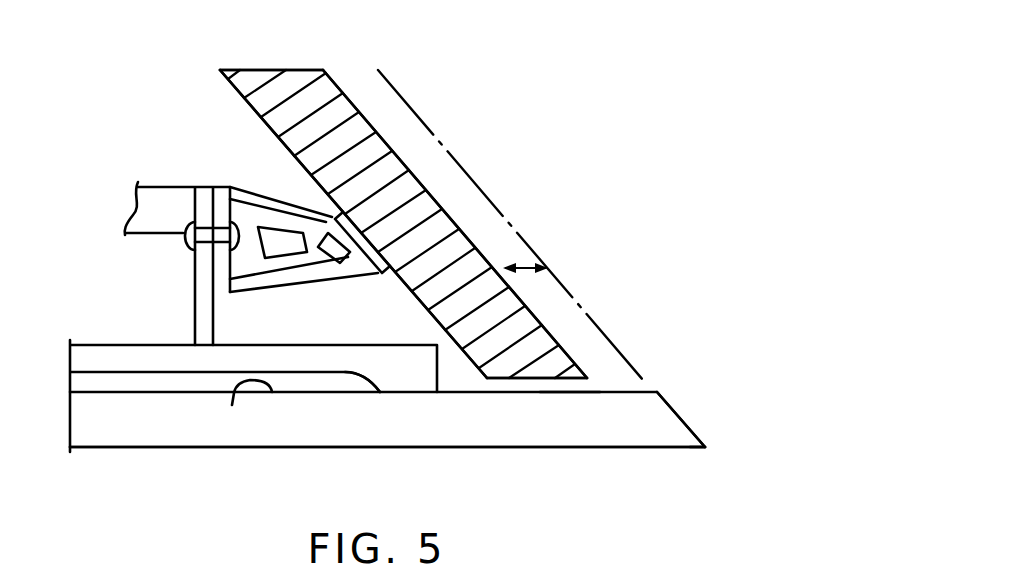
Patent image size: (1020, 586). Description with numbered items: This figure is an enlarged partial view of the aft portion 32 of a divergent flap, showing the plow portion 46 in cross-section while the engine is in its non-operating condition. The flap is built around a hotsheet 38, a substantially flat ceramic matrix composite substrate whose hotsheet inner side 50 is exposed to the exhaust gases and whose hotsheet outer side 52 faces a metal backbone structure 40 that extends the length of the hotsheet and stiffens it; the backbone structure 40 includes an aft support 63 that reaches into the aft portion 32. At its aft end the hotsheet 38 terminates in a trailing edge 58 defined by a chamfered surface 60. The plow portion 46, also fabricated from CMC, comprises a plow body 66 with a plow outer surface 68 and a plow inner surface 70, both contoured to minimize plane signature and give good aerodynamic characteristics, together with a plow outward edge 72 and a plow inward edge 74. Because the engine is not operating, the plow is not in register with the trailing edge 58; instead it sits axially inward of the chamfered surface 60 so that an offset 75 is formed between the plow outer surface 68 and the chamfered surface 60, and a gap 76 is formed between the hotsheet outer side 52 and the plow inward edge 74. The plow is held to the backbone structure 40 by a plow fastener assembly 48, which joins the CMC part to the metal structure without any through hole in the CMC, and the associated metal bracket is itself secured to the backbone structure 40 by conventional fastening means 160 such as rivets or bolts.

The aft portion 32 is at (622, 455).
The hotsheet 38 is at (170, 418).
The backbone structure 40 is at (138, 309).
The plow portion 46 is at (443, 124).
The plow fastener assembly 48 is at (334, 272).
The hotsheet inner side 50 is at (407, 448).
The hotsheet outer side 52 is at (242, 412).
The trailing edge 58 is at (705, 450).
The chamfered surface 60 is at (678, 410).
The aft support 63 is at (396, 372).
The plow body 66 is at (335, 100).
The plow outer surface 68 is at (440, 190).
The plow inner surface 70 is at (247, 103).
The plow outward edge 72 is at (260, 70).
The plow inward edge 74 is at (517, 380).
The offset 75 is at (521, 265).
The gap 76 is at (562, 385).
The fastening means 160 is at (200, 222).